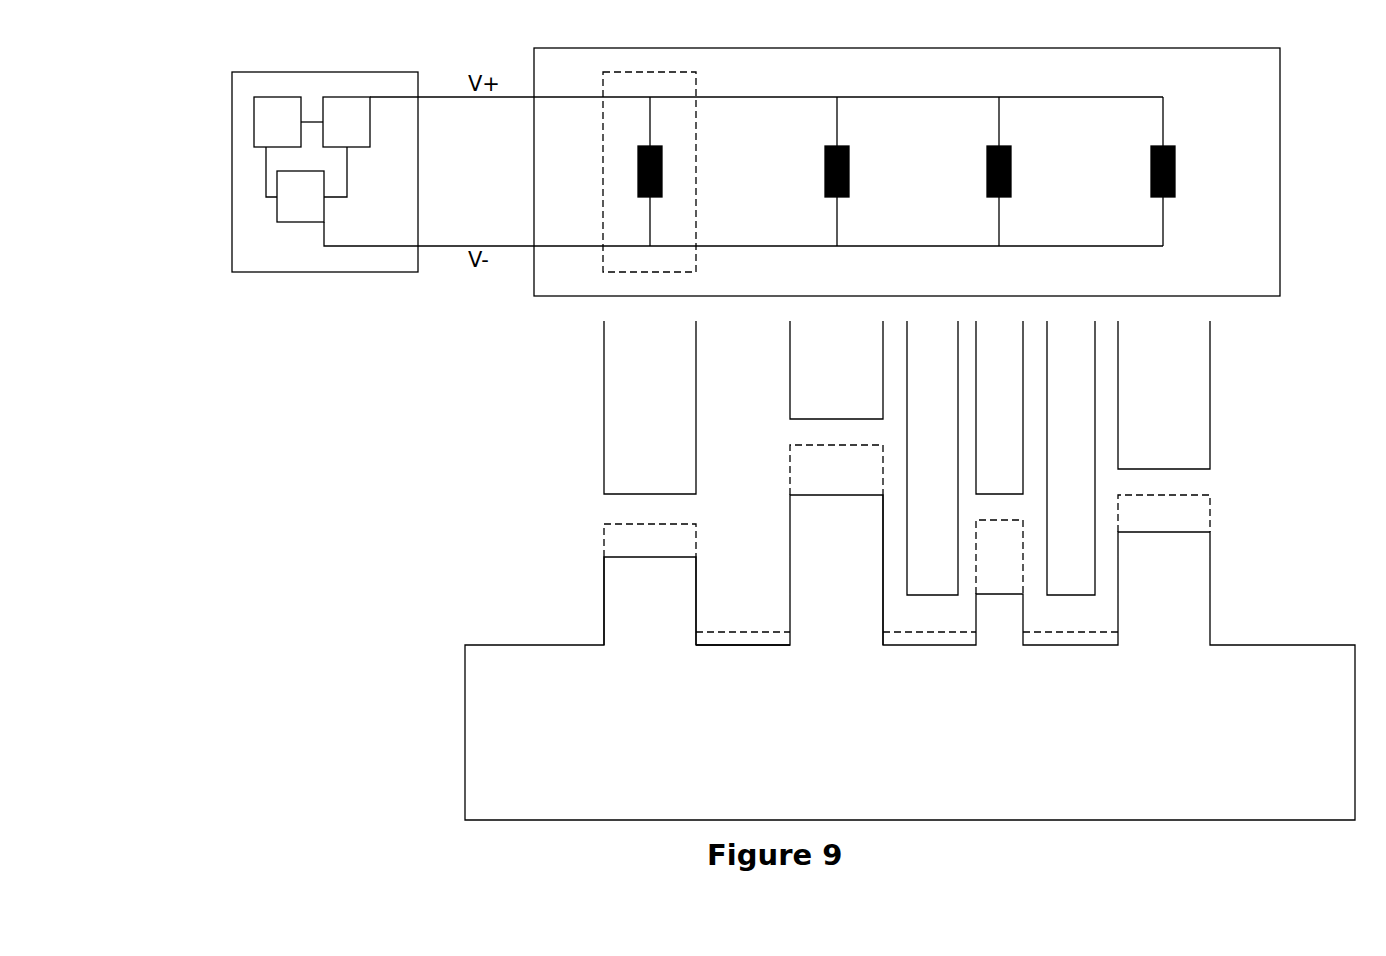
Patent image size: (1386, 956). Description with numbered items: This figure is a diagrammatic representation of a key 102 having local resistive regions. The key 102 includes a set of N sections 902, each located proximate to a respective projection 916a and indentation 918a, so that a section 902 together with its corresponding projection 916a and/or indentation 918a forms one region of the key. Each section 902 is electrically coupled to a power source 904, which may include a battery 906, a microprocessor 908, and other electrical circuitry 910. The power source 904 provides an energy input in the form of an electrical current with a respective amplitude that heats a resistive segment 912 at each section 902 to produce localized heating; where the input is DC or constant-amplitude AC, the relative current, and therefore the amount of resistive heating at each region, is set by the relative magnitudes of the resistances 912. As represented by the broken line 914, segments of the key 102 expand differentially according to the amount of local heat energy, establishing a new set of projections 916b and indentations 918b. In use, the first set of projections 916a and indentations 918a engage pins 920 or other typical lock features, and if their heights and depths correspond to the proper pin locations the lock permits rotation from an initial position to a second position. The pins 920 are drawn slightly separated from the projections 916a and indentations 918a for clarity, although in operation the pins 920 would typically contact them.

The key 102 is at (910, 657).
The section 902 is at (649, 72).
The power source 904 is at (276, 72).
The battery 906 is at (254, 122).
The microprocessor 908 is at (347, 97).
The other electrical circuitry 910 is at (302, 222).
The resistive segment 912 is at (662, 165).
The broken line 914 is at (604, 524).
The projection 916a is at (604, 594).
The new projection 916b is at (665, 524).
The indentation 918a is at (727, 645).
The new indentation 918b is at (777, 632).
The pin 920 is at (1210, 431).